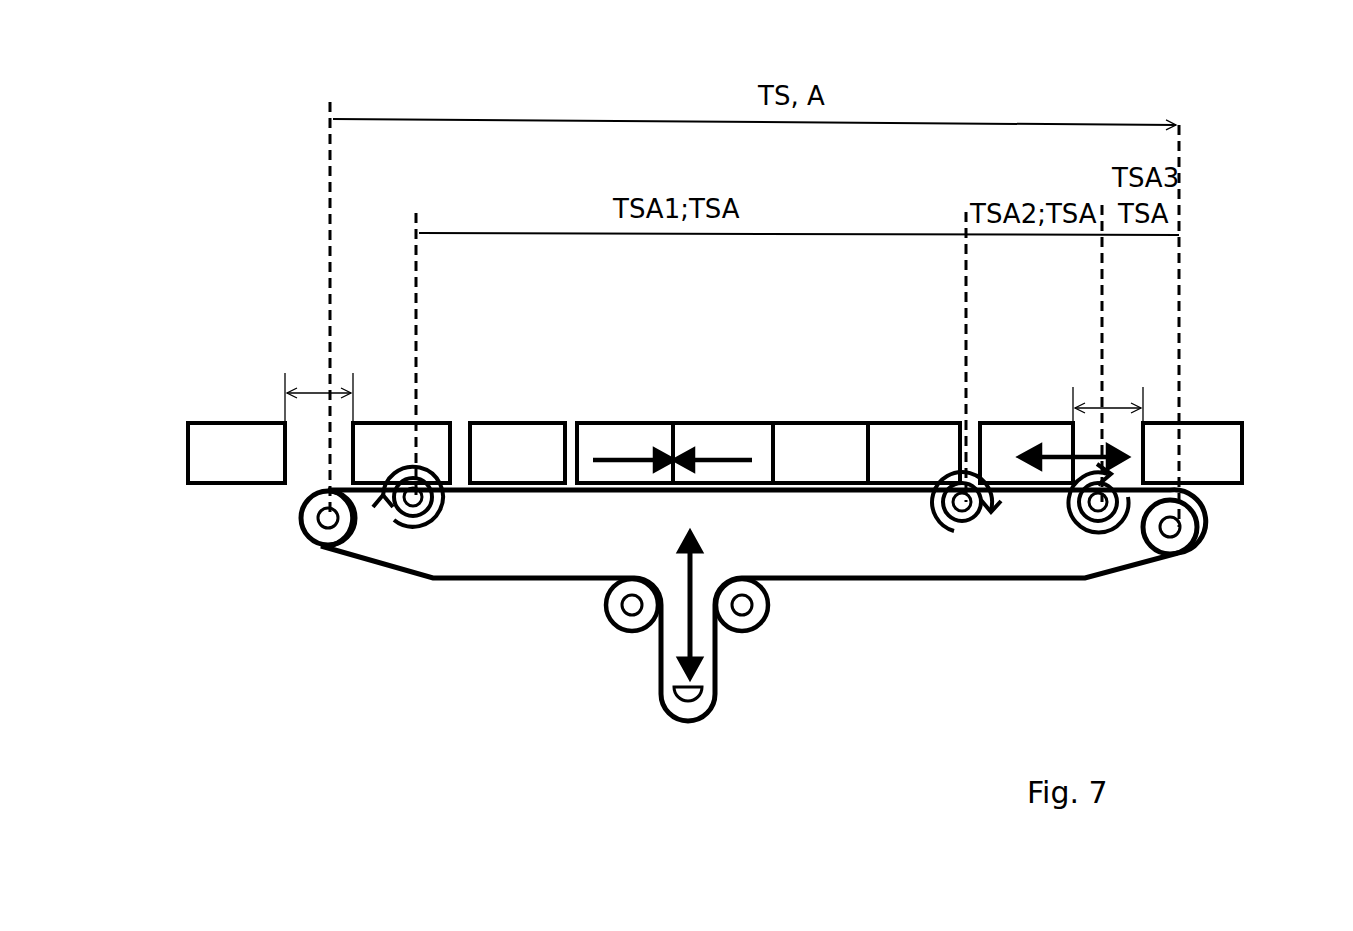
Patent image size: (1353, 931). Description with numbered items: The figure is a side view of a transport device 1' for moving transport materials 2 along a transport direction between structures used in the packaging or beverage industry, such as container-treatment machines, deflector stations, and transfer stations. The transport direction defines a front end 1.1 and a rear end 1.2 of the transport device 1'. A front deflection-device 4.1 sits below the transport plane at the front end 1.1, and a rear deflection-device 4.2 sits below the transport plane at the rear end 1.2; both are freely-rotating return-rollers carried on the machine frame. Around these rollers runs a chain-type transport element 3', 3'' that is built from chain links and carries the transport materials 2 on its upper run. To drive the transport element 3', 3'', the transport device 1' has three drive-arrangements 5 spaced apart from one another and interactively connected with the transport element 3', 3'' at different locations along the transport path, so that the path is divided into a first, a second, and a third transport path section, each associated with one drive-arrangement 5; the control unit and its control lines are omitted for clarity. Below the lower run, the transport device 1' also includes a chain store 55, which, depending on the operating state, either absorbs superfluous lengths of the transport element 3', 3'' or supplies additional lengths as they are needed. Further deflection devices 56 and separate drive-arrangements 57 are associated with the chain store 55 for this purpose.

The transport device 1' is at (738, 403).
The front end 1.1 is at (259, 560).
The rear end 1.2 is at (1228, 576).
The transport materials 2 is at (535, 422).
The transport element 3' is at (763, 605).
The transport element 3'' is at (763, 605).
The front deflection-device 4.1 is at (322, 532).
The rear deflection-device 4.2 is at (1175, 548).
The drive-arrangement 5 is at (410, 540).
The chain store 55 is at (657, 700).
The further deflection device 56 is at (677, 641).
The separate drive-arrangement 57 is at (598, 633).